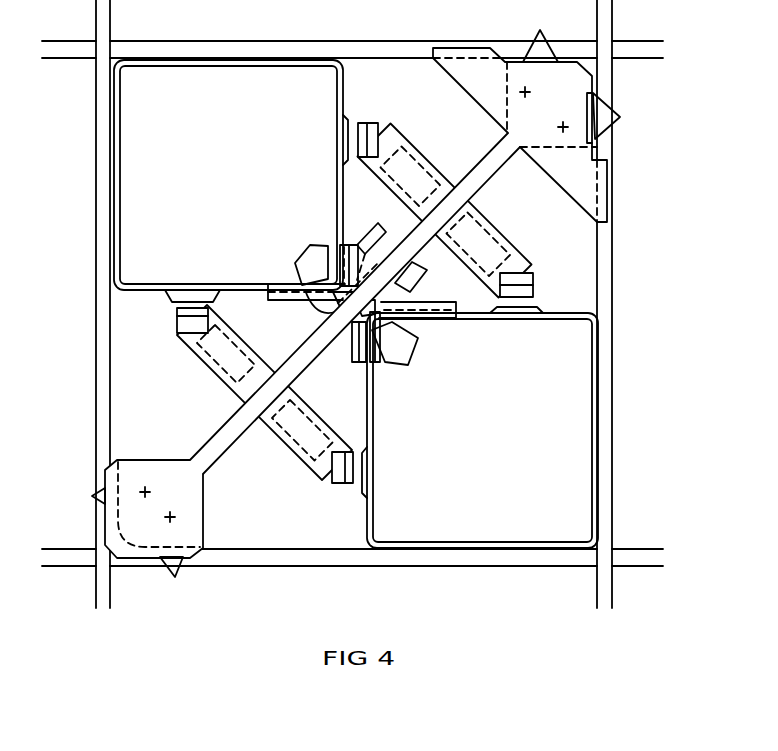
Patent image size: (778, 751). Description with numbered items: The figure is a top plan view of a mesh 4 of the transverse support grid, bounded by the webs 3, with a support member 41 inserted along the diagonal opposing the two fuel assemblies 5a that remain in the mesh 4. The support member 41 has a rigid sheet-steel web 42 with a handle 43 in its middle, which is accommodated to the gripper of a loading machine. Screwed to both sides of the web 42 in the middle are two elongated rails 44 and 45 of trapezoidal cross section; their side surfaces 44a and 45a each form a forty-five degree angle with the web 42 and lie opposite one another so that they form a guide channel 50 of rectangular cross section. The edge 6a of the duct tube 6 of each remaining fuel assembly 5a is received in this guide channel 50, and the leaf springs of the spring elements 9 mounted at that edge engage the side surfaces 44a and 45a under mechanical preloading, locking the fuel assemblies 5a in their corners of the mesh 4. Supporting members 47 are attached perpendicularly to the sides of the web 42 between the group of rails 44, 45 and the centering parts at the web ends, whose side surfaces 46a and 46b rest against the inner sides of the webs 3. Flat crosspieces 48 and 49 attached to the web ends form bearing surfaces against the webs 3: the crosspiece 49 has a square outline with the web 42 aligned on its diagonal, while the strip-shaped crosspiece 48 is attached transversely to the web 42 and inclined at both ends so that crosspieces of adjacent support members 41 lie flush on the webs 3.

The web 3 is at (389, 44).
The mesh 4 is at (135, 394).
The fuel assembly 5a is at (218, 77).
The duct tube 6 is at (143, 294).
The edge 6a is at (333, 248).
The spring element 9 is at (320, 268).
The support member 41 is at (488, 178).
The web 42 is at (233, 433).
The handle 43 is at (300, 355).
The rail 44 is at (326, 345).
The side surface 44a is at (312, 300).
The rail 45 is at (388, 233).
The side surface 45a is at (347, 252).
The side surface 46a is at (620, 117).
The side surface 46b is at (310, 262).
The supporting member 47 is at (410, 148).
The crosspiece 48 is at (347, 117).
The crosspiece 49 is at (192, 503).
The guide channel 50 is at (293, 313).